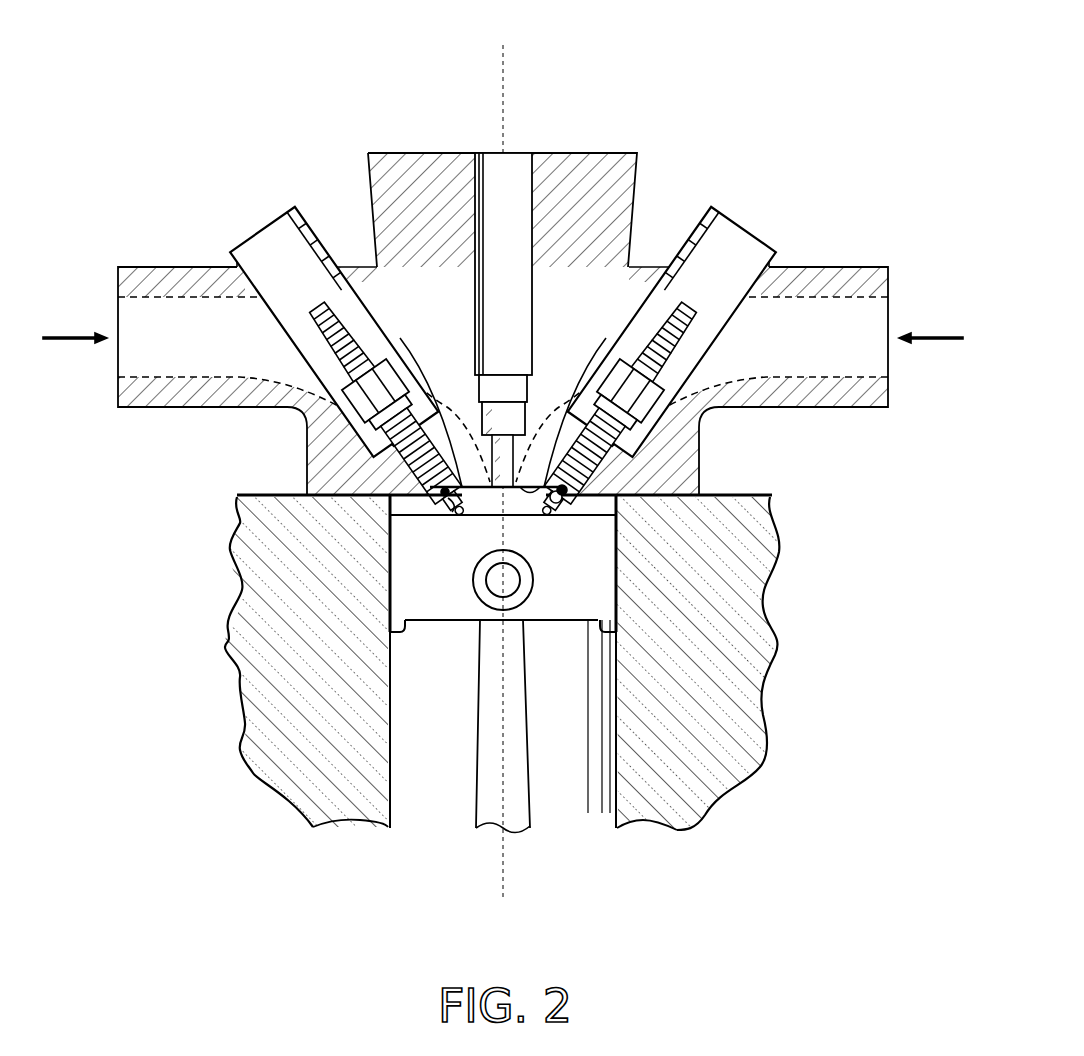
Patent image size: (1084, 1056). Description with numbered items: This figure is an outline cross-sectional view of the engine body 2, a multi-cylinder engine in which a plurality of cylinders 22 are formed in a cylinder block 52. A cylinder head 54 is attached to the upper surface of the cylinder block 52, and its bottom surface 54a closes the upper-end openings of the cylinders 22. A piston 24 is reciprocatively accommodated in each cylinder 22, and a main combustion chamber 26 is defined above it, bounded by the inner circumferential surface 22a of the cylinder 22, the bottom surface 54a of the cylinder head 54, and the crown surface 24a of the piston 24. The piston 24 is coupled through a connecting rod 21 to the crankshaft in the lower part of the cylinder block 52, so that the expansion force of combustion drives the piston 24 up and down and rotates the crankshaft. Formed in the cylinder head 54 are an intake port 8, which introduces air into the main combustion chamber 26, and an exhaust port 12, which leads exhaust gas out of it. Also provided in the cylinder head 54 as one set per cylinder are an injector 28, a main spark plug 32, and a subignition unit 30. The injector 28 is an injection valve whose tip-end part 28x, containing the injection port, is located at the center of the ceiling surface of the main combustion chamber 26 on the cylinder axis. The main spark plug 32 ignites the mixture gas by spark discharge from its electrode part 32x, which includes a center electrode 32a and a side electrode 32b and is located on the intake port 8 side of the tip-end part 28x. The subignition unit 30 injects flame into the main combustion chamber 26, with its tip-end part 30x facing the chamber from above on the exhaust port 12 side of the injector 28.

The engine body 2 is at (592, 104).
The intake port 8 is at (177, 307).
The exhaust port 12 is at (836, 302).
The connecting rod 21 is at (470, 824).
The cylinder 22 is at (414, 798).
The inner circumferential surface 22a is at (600, 824).
The piston 24 is at (573, 627).
The crown surface 24a is at (577, 510).
The main combustion chamber 26 is at (537, 507).
The injector 28 is at (480, 146).
The tip-end part 28x is at (460, 438).
The subignition unit 30 is at (703, 281).
The tip-end part 30x is at (607, 490).
The main spark plug 32 is at (303, 281).
The center electrode 32a is at (440, 497).
The side electrode 32b is at (427, 515).
The electrode part 32x is at (164, 497).
The cylinder block 52 is at (780, 646).
The cylinder head 54 is at (840, 400).
The bottom surface 54a is at (546, 438).